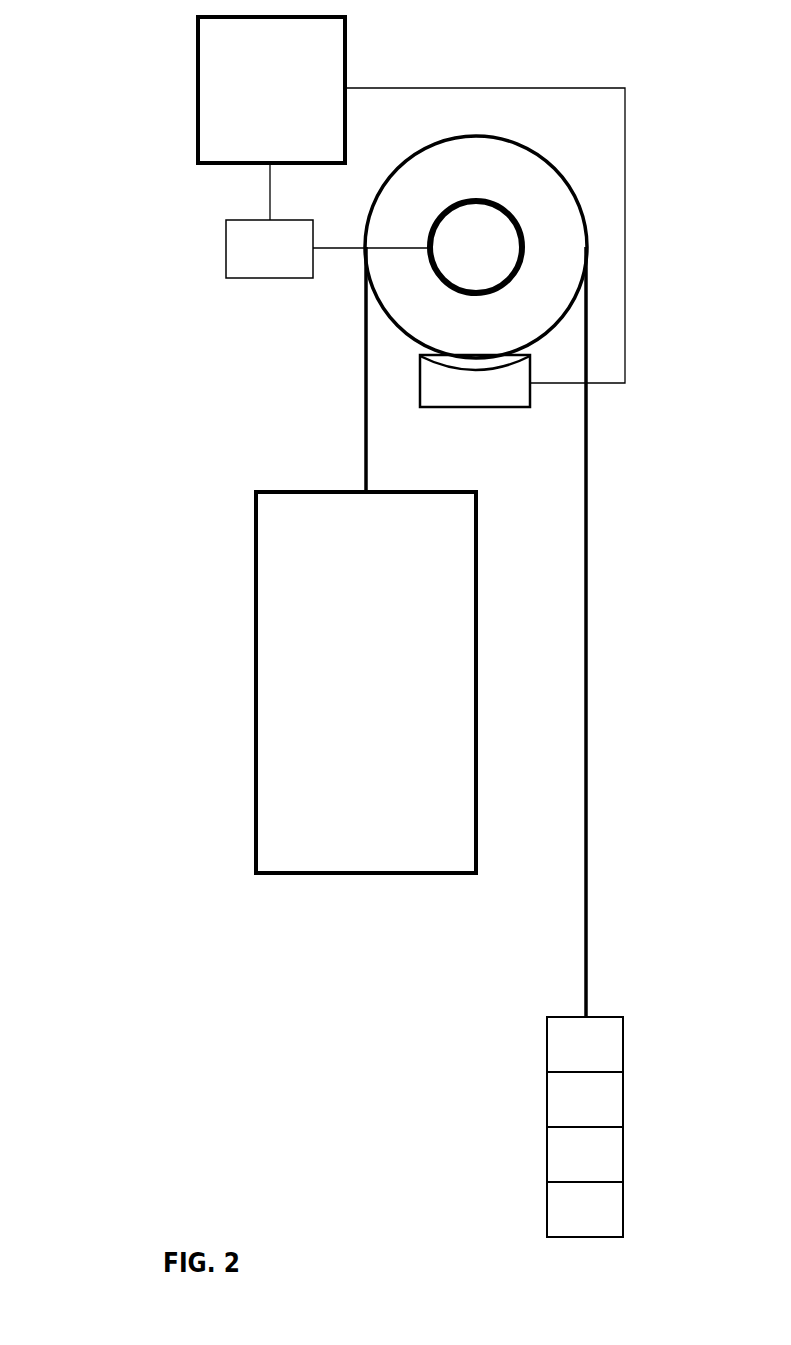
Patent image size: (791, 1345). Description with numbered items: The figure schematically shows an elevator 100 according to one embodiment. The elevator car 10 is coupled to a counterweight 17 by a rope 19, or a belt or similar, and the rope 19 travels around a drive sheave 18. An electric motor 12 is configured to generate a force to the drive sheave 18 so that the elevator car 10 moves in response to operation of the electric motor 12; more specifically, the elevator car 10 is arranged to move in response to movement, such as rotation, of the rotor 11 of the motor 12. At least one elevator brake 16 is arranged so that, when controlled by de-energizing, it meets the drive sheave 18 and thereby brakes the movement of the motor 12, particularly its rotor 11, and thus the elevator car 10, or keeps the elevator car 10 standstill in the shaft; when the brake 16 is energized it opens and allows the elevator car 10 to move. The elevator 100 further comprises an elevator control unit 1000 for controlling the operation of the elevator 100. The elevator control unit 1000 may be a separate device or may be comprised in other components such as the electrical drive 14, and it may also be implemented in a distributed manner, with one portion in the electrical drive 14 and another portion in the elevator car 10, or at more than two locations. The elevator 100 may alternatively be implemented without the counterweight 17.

The elevator 100 is at (117, 83).
The elevator control unit 1000 is at (238, 103).
The electrical drive 14 is at (287, 262).
The drive sheave 18 is at (423, 163).
The electric motor 12 is at (461, 261).
The rotor 11 is at (473, 277).
The elevator brake 16 is at (475, 405).
The rope 19 is at (366, 420).
The elevator car 10 is at (383, 694).
The counterweight 17 is at (623, 1112).